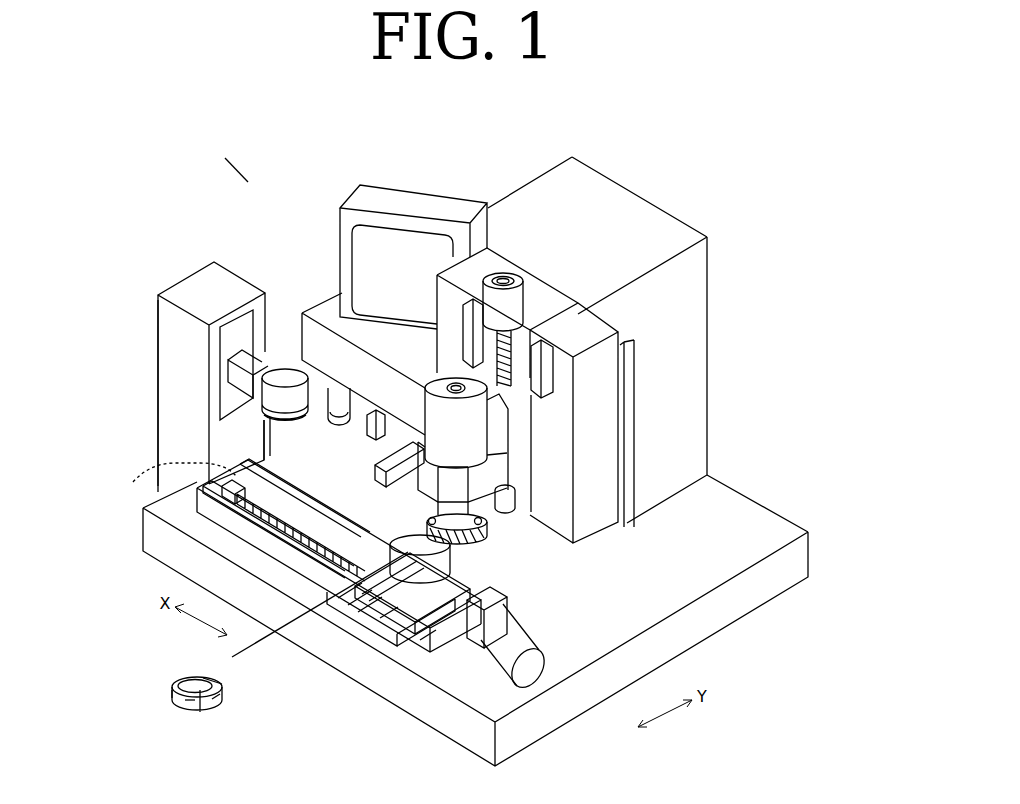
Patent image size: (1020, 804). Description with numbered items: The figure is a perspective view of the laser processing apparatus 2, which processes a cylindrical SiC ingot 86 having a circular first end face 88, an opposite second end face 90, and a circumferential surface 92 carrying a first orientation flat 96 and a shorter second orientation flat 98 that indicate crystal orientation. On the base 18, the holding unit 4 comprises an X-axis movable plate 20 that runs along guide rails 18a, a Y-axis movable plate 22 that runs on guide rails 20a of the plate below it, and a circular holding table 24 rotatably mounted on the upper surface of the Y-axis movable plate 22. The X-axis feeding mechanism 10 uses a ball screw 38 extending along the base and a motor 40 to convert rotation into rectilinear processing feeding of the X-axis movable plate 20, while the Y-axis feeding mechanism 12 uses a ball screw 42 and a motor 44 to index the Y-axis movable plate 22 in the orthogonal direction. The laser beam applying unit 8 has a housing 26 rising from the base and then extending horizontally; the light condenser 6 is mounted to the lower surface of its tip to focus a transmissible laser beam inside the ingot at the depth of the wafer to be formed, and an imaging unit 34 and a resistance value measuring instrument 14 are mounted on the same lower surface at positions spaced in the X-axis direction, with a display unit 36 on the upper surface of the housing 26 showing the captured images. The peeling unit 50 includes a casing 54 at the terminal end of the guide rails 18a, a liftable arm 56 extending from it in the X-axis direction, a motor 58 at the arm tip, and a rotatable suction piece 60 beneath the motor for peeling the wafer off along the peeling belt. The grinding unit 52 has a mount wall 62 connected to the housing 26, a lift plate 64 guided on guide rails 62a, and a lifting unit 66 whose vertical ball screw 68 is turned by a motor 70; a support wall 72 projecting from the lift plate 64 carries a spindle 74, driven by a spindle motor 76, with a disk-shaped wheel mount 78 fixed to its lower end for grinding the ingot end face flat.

The laser processing apparatus 2 is at (248, 182).
The holding unit 4 is at (366, 678).
The light condenser 6 is at (318, 380).
The laser beam applying unit 8 is at (540, 177).
The X-axis feeding mechanism 10 is at (396, 576).
The Y-axis feeding mechanism 12 is at (475, 584).
The resistance value measuring instrument 14 is at (378, 469).
The base 18 is at (738, 514).
The guide rails 18a is at (160, 470).
The X-axis movable plate 20 is at (352, 606).
The guide rails 20a is at (322, 598).
The Y-axis movable plate 22 is at (385, 606).
The holding table 24 is at (408, 696).
The housing 26 is at (700, 369).
The imaging unit 34 is at (368, 430).
The display unit 36 is at (440, 205).
The ball screw 38 is at (468, 616).
The motor 40 is at (505, 642).
The ball screw 42 is at (438, 576).
The motor 44 is at (460, 551).
The peeling unit 50 is at (180, 276).
The grinding unit 52 is at (605, 320).
The casing 54 is at (160, 333).
The arm 56 is at (256, 360).
The motor 58 is at (286, 377).
The suction piece 60 is at (263, 432).
The mount wall 62 is at (600, 430).
The guide rails 62a is at (463, 345).
The lift plate 64 is at (548, 470).
The lifting unit 66 is at (561, 311).
The ball screw 68 is at (517, 335).
The motor 70 is at (512, 296).
The support wall 72 is at (502, 462).
The spindle 74 is at (430, 528).
The spindle motor 76 is at (440, 421).
The wheel mount 78 is at (492, 512).
The SiC ingot 86 is at (178, 681).
The first end face 88 is at (190, 681).
The second end face 90 is at (190, 708).
The circumferential surface 92 is at (172, 702).
The first orientation flat 96 is at (214, 706).
The second orientation flat 98 is at (212, 681).